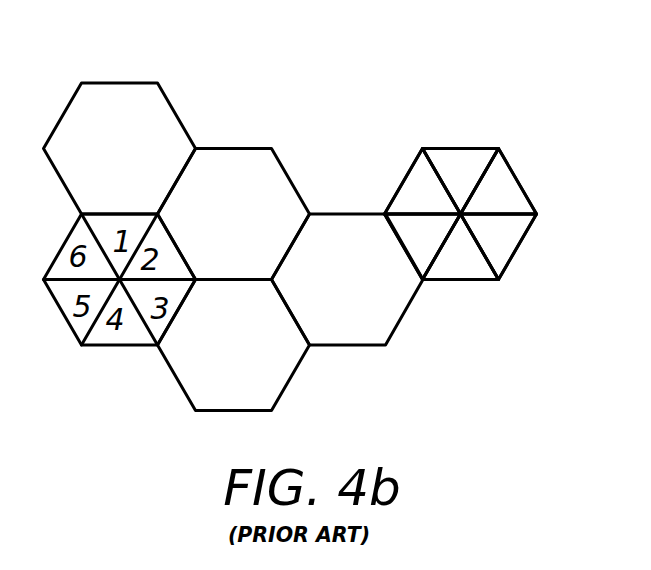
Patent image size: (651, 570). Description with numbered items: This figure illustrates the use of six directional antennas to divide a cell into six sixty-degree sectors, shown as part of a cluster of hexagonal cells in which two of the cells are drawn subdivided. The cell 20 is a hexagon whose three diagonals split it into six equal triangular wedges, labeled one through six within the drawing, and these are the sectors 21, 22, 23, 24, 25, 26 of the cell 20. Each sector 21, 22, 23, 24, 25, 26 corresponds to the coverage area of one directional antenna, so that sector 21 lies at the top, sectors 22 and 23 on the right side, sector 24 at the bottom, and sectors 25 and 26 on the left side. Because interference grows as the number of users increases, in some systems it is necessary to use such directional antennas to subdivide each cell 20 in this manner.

The cell 20 is at (422, 148).
The sector 21 is at (462, 148).
The sector 22 is at (520, 176).
The sector 23 is at (521, 247).
The sector 24 is at (455, 282).
The sector 25 is at (402, 247).
The sector 26 is at (402, 181).